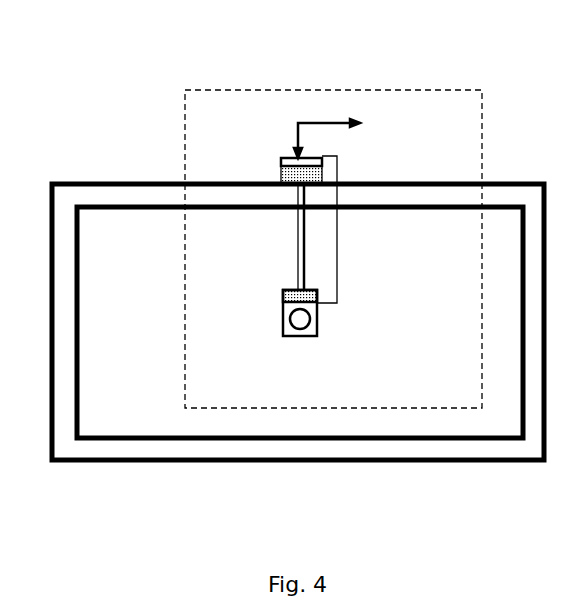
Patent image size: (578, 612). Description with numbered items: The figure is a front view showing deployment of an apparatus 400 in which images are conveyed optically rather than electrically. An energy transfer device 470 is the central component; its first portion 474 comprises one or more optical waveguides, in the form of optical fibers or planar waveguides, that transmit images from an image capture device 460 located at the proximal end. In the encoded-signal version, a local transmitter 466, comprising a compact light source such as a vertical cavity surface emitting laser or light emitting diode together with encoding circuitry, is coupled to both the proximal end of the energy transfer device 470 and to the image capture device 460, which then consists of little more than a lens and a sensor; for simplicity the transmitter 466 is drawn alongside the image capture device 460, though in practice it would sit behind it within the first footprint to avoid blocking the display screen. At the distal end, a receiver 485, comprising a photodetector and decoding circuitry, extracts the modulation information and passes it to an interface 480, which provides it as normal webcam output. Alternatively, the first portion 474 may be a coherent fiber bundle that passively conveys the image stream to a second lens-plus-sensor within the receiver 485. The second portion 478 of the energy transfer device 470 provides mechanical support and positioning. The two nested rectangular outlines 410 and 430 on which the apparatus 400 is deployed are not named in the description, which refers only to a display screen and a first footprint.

The apparatus 400 is at (246, 90).
The outer frame 410 is at (66, 182).
The inner frame 430 is at (165, 228).
The energy transfer device 470 is at (337, 228).
The first portion of energy transfer device 474 is at (297, 260).
The second portion of energy transfer device 478 is at (280, 160).
The interface 480 is at (327, 129).
The receiver 485 is at (322, 177).
The image capture device 460 is at (317, 338).
The local transmitter 466 is at (283, 297).